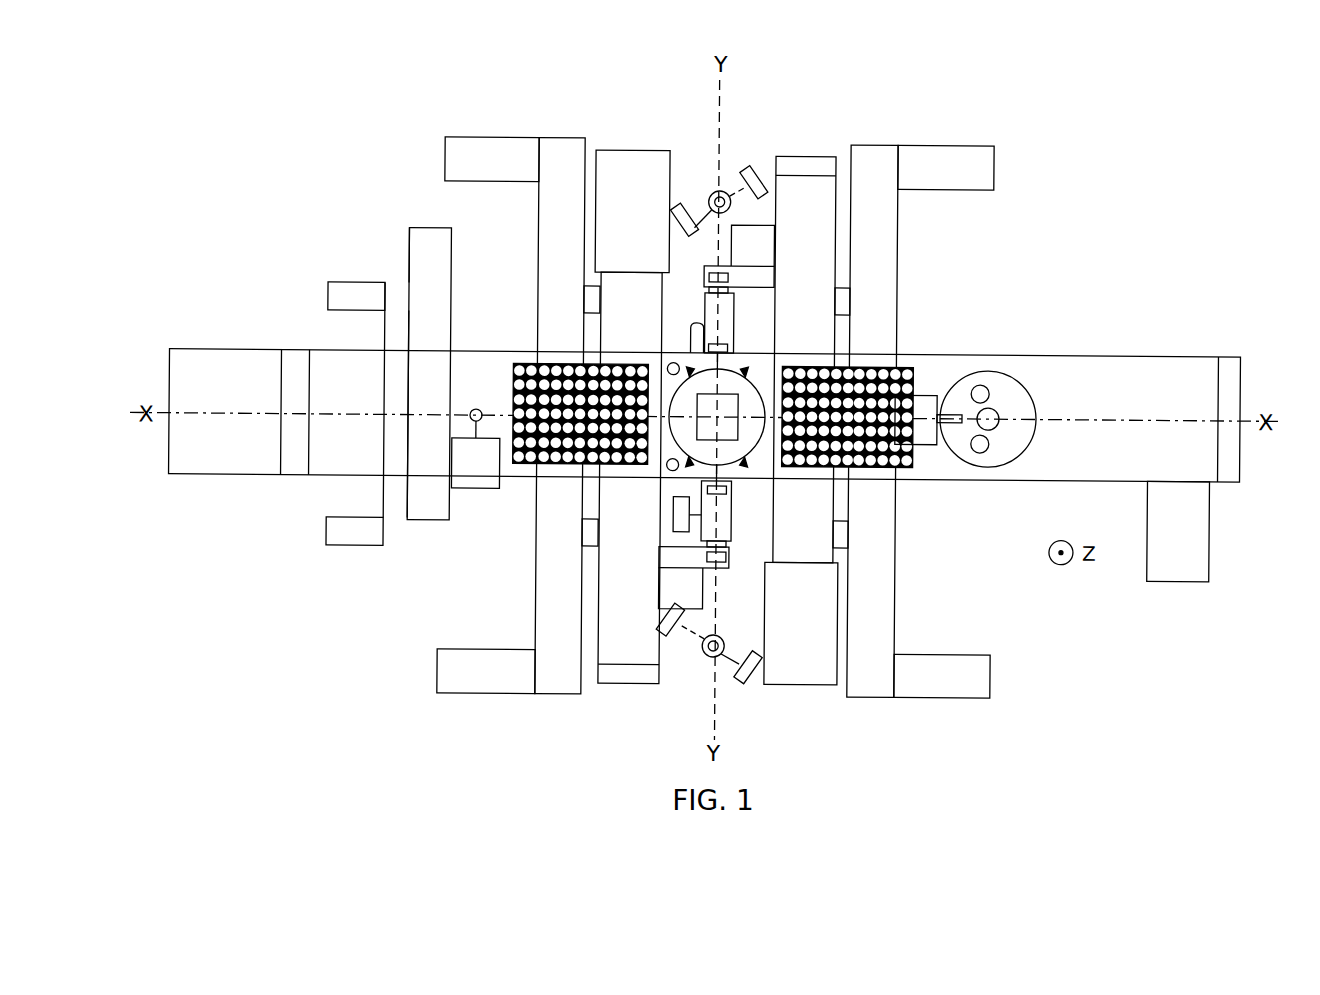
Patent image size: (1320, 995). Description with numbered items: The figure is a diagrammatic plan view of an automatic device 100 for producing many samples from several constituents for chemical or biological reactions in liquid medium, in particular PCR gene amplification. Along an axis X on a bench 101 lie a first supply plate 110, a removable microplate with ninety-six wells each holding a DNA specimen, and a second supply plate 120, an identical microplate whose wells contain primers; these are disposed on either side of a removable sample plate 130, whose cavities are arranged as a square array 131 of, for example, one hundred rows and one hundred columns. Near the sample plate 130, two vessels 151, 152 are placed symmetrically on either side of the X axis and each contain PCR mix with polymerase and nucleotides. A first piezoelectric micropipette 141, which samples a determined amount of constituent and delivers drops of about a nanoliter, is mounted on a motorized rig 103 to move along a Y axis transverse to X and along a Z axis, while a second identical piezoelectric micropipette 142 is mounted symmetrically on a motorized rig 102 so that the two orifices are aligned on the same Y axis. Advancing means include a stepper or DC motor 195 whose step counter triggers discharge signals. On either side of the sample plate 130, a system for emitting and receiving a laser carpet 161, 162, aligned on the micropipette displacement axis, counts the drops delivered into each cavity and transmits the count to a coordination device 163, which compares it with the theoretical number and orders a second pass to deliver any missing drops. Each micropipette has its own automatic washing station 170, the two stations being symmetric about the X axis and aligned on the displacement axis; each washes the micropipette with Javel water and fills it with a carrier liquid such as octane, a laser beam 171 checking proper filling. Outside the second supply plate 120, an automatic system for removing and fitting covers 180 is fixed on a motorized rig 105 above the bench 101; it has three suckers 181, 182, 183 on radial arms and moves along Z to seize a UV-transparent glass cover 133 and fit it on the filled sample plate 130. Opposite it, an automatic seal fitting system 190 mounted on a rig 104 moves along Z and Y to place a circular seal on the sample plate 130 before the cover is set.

The automatic device 100 is at (868, 79).
The bench 101 is at (1145, 372).
The motorized rig 102 is at (798, 178).
The motorized rig 103 is at (611, 658).
The rig 104 is at (421, 509).
The motorized rig 105 is at (875, 154).
The first supply plate 110 is at (518, 366).
The second supply plate 120 is at (898, 378).
The sample plate 130 is at (734, 455).
The array 131 is at (726, 402).
The cover 133 is at (1025, 440).
The first piezoelectric micropipette 141 is at (729, 559).
The second piezoelectric micropipette 142 is at (706, 275).
The vessel 151 is at (673, 473).
The vessel 152 is at (672, 363).
The laser carpet emitting/receiving system 161 is at (733, 526).
The laser carpet emitting/receiving system 162 is at (731, 304).
The coordination device 163 is at (676, 514).
The automatic washing station 170 is at (709, 187).
The laser beam 171 is at (670, 214).
The automatic system for removing and fitting covers 180 is at (955, 432).
The sucker 181 is at (982, 451).
The sucker 182 is at (1000, 412).
The sucker 183 is at (985, 386).
The automatic seal fitting system 190 is at (464, 482).
The stepper or DC motor 195 is at (1182, 580).